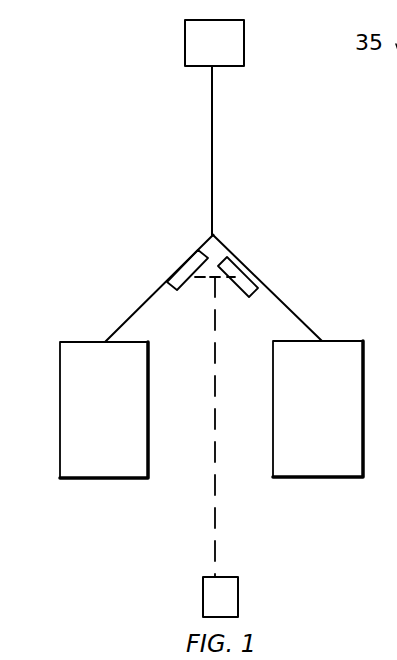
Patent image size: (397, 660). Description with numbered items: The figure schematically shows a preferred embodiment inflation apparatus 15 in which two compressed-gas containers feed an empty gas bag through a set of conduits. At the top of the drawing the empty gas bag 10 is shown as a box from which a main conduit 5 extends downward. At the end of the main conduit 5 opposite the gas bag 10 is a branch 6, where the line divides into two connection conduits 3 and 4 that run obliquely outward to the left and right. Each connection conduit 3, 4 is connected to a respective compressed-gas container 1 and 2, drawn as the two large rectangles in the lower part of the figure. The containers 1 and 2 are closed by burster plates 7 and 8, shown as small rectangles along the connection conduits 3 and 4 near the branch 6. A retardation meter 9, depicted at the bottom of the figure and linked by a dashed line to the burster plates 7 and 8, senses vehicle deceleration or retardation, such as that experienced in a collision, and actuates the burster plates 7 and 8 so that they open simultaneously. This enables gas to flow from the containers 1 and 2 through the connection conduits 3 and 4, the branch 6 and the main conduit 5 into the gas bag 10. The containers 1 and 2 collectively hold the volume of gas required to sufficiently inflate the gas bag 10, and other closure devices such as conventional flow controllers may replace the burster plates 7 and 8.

The inflation apparatus 15 is at (74, 75).
The gas bag 10 is at (244, 55).
The main conduit 5 is at (213, 143).
The branch 6 is at (215, 236).
The connection conduit 3 is at (137, 307).
The connection conduit 4 is at (292, 307).
The burster plate 7 is at (185, 281).
The burster plate 8 is at (245, 290).
The compressed-gas container 1 is at (60, 422).
The compressed-gas container 2 is at (363, 430).
The retardation meter 9 is at (238, 596).